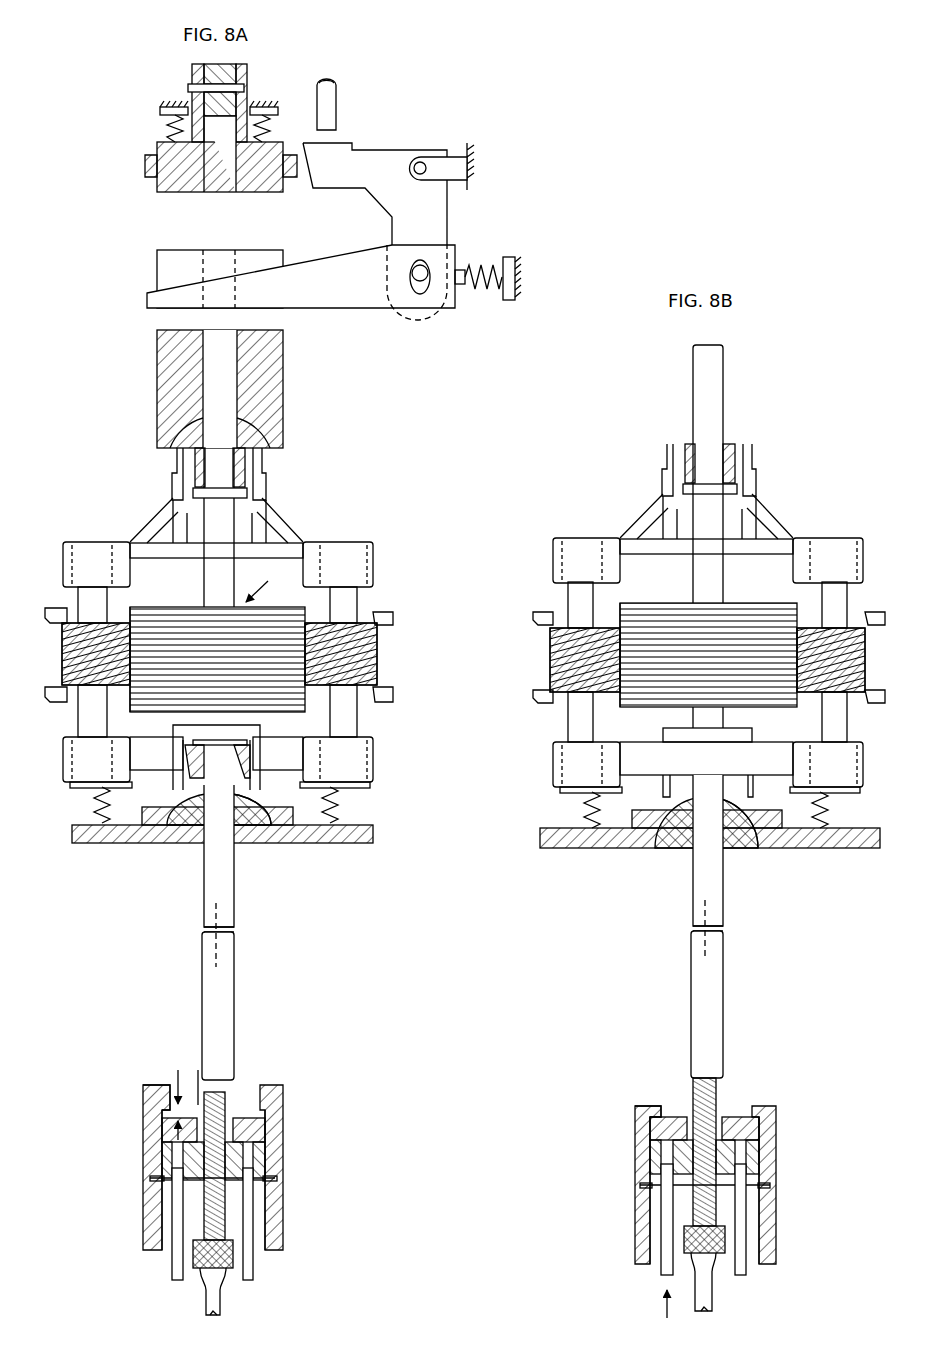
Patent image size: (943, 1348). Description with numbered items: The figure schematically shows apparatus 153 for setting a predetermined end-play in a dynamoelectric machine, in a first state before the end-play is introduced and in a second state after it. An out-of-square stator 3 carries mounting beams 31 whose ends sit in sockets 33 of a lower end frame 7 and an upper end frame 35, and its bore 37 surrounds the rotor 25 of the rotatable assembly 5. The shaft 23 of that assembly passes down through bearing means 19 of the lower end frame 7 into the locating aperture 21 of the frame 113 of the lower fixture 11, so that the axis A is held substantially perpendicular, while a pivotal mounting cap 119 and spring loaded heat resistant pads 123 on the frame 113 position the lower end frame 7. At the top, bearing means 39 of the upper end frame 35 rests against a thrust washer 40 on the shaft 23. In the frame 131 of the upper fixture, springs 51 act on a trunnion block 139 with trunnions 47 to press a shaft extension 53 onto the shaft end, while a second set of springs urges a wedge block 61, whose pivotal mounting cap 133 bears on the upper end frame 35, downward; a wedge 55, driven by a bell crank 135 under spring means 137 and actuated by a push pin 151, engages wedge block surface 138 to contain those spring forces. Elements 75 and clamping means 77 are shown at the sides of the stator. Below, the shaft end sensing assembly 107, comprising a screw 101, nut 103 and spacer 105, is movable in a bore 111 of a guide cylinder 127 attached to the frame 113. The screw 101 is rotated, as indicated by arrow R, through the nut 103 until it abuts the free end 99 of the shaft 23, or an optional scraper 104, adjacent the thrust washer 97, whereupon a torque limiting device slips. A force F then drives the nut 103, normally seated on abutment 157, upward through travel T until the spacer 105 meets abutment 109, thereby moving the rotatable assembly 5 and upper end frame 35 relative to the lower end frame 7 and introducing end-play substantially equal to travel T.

In FIG. 8A, the stator 3 is at (219, 654).
In FIG. 8B, the stator 3 is at (707, 660).
In FIG. 8A, the rotatable assembly 5 is at (284, 581).
In FIG. 8A, the lower end frame 7 is at (372, 786).
In FIG. 8B, the lower end frame 7 is at (860, 790).
In FIG. 8A, the lower fixture 11 is at (304, 1235).
In FIG. 8B, the lower fixture 11 is at (808, 1253).
In FIG. 8A, the bearing means 19 is at (246, 760).
In FIG. 8A, the locating aperture 21 is at (240, 835).
In FIG. 8B, the locating aperture 21 is at (725, 843).
In FIG. 8A, the shaft 23 is at (204, 872).
In FIG. 8B, the shaft 23 is at (692, 889).
In FIG. 8A, the rotor 25 is at (217, 659).
In FIG. 8B, the rotor 25 is at (708, 655).
In FIG. 8A, the mounting beams 31 is at (86, 603).
In FIG. 8B, the mounting beams 31 is at (574, 605).
In FIG. 8A, the sockets 33 is at (78, 542).
In FIG. 8B, the sockets 33 is at (571, 537).
In FIG. 8A, the upper end frame 35 is at (154, 518).
In FIG. 8B, the upper end frame 35 is at (650, 508).
In FIG. 8A, the bore 37 is at (130, 663).
In FIG. 8B, the bore 37 is at (620, 674).
In FIG. 8A, the bearing means 39 is at (248, 471).
In FIG. 8A, the thrust washer 40 is at (250, 494).
In FIG. 8A, the trunnions 47 is at (150, 168).
In FIG. 8A, the springs 51 is at (168, 127).
In FIG. 8A, the shaft extension 53 is at (222, 321).
In FIG. 8A, the wedge 55 is at (447, 308).
In FIG. 8A, the wedge block 61 is at (284, 390).
In FIG. 8A, the contact 75 is at (53, 626).
In FIG. 8B, the contact 75 is at (540, 630).
In FIG. 8A, the clamping means 77 is at (55, 704).
In FIG. 8B, the clamping means 77 is at (540, 706).
In FIG. 8A, the thrust washer 97 is at (195, 743).
In FIG. 8A, the free end 99 is at (226, 928).
In FIG. 8B, the free end 99 is at (723, 924).
In FIG. 8A, the screw 101 is at (229, 1094).
In FIG. 8B, the screw 101 is at (720, 1101).
In FIG. 8A, the nut 103 is at (262, 1160).
In FIG. 8B, the nut 103 is at (760, 1159).
In FIG. 8A, the scraper 104 is at (228, 999).
In FIG. 8B, the scraper 104 is at (718, 1016).
In FIG. 8A, the spacer 105 is at (262, 1130).
In FIG. 8B, the spacer 105 is at (760, 1132).
In FIG. 8A, the shaft end sensing assembly 107 is at (295, 1092).
In FIG. 8B, the shaft end sensing assembly 107 is at (797, 1113).
In FIG. 8A, the abutment 109 is at (166, 1106).
In FIG. 8B, the abutment 109 is at (655, 1108).
In FIG. 8A, the bore 111 is at (150, 1162).
In FIG. 8B, the bore 111 is at (645, 1245).
In FIG. 8A, the frame 113 is at (88, 846).
In FIG. 8B, the frame 113 is at (568, 850).
In FIG. 8A, the pivotal mounting cap 119 is at (180, 812).
In FIG. 8B, the pivotal mounting cap 119 is at (680, 820).
In FIG. 8A, the heat resistant pads 123 is at (348, 791).
In FIG. 8B, the heat resistant pads 123 is at (562, 795).
In FIG. 8A, the guide cylinder 127 is at (283, 1214).
In FIG. 8B, the guide cylinder 127 is at (780, 1228).
In FIG. 8A, the frame 131 is at (262, 100).
In FIG. 8A, the pivotal mounting cap 133 is at (284, 434).
In FIG. 8A, the bell crank 135 is at (450, 217).
In FIG. 8A, the spring means 137 is at (480, 266).
In FIG. 8A, the wedge block surface 138 is at (180, 278).
In FIG. 8A, the trunnion block 139 is at (196, 169).
In FIG. 8A, the push pin 151 is at (338, 106).
In FIG. 8A, the apparatus 153 is at (138, 1216).
In FIG. 8B, the apparatus 153 is at (624, 1204).
In FIG. 8A, the abutment 157 is at (156, 1181).
In FIG. 8B, the abutment 157 is at (775, 1191).
In FIG. 8A, the axis A is at (216, 948).
In FIG. 8B, the axis A is at (708, 952).
In FIG. 8A, the travel T is at (176, 1078).
In FIG. 8A, the rotational arrow R is at (200, 1288).
In FIG. 8B, the force F is at (664, 1316).